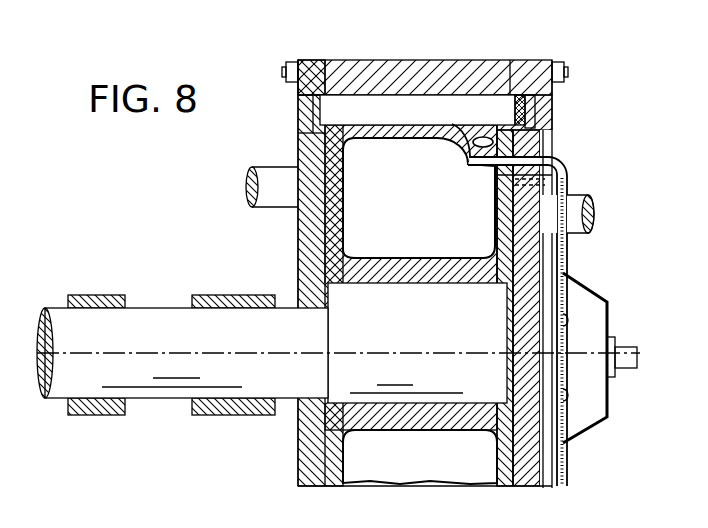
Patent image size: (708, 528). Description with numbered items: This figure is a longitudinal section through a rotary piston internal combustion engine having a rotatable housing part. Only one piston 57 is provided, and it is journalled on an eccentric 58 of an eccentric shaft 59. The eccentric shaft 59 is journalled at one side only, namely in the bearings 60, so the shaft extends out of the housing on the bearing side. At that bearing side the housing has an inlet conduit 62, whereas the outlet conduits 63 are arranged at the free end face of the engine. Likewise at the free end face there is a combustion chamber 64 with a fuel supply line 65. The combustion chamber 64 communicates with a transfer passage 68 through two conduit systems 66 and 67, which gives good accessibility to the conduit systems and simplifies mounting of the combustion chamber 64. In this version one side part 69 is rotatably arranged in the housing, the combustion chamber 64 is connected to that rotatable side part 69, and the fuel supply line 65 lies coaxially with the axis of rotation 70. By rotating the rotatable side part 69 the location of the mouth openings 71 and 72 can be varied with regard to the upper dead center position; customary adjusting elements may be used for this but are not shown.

The piston 57 is at (372, 128).
The eccentric 58 is at (428, 345).
The eccentric shaft 59 is at (168, 388).
The bearings 60 is at (191, 295).
The inlet conduit 62 is at (255, 195).
The outlet conduits 63 is at (594, 225).
The combustion chamber 64 is at (583, 290).
The fuel supply line 65 is at (624, 370).
The conduit system 66 is at (553, 158).
The conduit system 67 is at (567, 172).
The transfer passage 68 is at (462, 160).
The side part 69 is at (533, 460).
The axis of rotation 70 is at (67, 353).
The mouth opening 71 is at (505, 167).
The mouth opening 72 is at (523, 183).